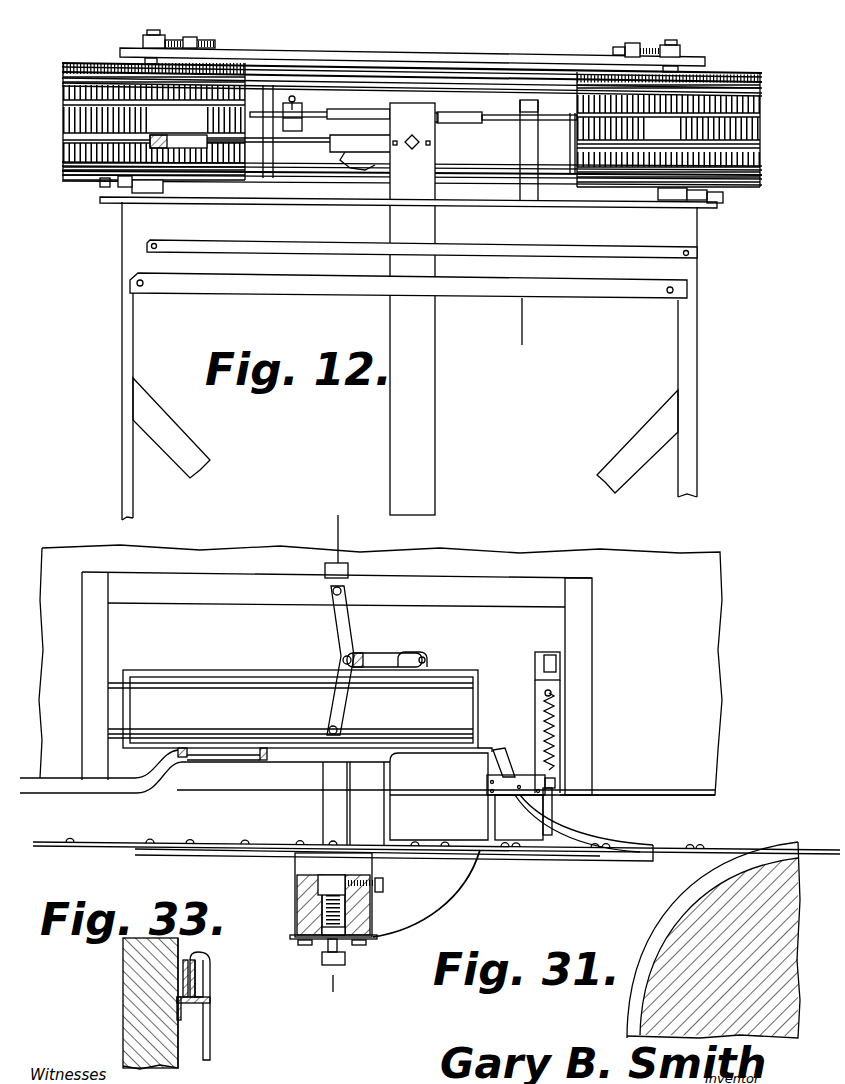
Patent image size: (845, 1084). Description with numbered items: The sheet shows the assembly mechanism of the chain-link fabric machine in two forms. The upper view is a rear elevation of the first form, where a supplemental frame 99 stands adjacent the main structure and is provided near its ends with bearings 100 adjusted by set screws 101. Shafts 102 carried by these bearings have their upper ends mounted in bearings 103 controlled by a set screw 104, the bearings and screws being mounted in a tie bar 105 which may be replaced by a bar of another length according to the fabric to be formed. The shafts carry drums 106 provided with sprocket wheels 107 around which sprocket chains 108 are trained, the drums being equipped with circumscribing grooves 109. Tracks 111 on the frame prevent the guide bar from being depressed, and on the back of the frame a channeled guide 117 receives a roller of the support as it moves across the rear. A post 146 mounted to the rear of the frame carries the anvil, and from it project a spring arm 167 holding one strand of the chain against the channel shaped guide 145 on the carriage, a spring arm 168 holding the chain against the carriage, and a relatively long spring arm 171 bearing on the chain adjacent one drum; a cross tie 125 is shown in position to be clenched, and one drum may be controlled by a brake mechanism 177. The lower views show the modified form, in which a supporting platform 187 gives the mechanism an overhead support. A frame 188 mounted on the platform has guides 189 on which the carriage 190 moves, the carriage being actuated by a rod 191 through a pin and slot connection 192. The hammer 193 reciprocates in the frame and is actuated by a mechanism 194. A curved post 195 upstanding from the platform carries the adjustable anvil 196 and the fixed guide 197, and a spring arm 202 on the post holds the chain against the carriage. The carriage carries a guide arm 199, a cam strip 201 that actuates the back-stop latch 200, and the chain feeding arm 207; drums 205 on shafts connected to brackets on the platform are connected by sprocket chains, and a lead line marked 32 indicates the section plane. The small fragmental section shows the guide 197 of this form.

In FIG. 12, the supplemental frame 99 is at (688, 352).
In FIG. 12, the bearings 100 is at (147, 187).
In FIG. 12, the set screws 101 is at (95, 190).
In FIG. 12, the shafts 102 is at (155, 33).
In FIG. 12, the bearings 103 is at (143, 42).
In FIG. 12, the set screw 104 is at (210, 45).
In FIG. 12, the tie bar 105 is at (455, 58).
In FIG. 12, the drums 106 is at (63, 152).
In FIG. 12, the sprocket wheels 107 is at (68, 70).
In FIG. 12, the sprocket chains 108 is at (330, 72).
In FIG. 12, the circumscribing grooves 109 is at (65, 137).
In FIG. 12, the tracks 111 is at (267, 285).
In FIG. 12, the channeled guide 117 is at (228, 245).
In FIG. 12, the cross tie 125 is at (557, 177).
In FIG. 12, the channel shaped guide 145 is at (372, 112).
In FIG. 12, the post 146 is at (435, 415).
In FIG. 12, the spring arm 167 is at (472, 113).
In FIG. 12, the spring arm 168 is at (345, 147).
In FIG. 12, the spring arm 171 is at (188, 143).
In FIG. 12, the brake mechanism 177 is at (292, 98).
In FIG. 31, the shaft 32 is at (333, 760).
In FIG. 31, the supporting platform 187 is at (702, 593).
In FIG. 31, the frame 188 is at (577, 655).
In FIG. 31, the guides 189 is at (489, 738).
In FIG. 31, the carriage 190 is at (443, 678).
In FIG. 31, the rod 191 is at (47, 787).
In FIG. 31, the pin and slot connection 192 is at (248, 747).
In FIG. 31, the hammer 193 is at (328, 632).
In FIG. 31, the mechanism 194 is at (347, 638).
In FIG. 31, the curved post 195 is at (305, 907).
In FIG. 31, the adjustable anvil 196 is at (320, 875).
In FIG. 31, the guide 197 is at (378, 850).
In FIG. 33, the guide 197 is at (197, 1000).
In FIG. 31, the guide arm 199 is at (567, 832).
In FIG. 31, the back-stop latch 200 is at (548, 800).
In FIG. 31, the cam strip 201 is at (502, 787).
In FIG. 31, the spring arm 202 is at (457, 893).
In FIG. 31, the drums 205 is at (693, 902).
In FIG. 31, the chain feeding arm 207 is at (537, 838).